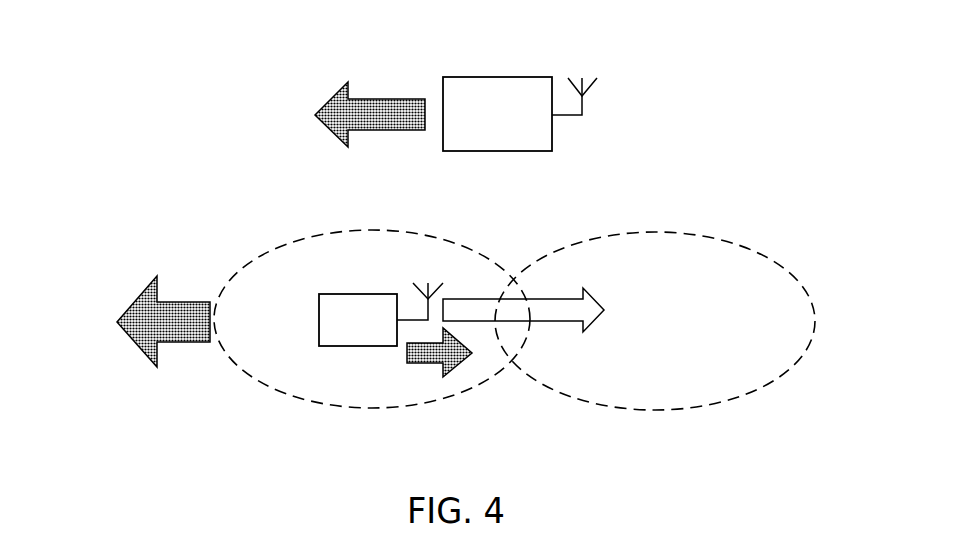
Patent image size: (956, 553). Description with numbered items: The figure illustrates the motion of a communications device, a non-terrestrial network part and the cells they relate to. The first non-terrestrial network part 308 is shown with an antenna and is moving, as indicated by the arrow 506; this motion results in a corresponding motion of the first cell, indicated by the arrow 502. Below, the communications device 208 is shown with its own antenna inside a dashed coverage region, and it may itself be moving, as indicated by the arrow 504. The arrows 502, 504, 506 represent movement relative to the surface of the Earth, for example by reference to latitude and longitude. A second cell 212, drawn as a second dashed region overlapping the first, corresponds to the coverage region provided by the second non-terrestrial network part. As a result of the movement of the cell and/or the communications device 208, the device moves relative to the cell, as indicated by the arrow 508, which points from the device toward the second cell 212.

The communications device 208 is at (357, 347).
The second cell 212 is at (773, 380).
The first non-terrestrial network part 308 is at (498, 77).
The arrow 502 is at (135, 348).
The arrow 504 is at (428, 363).
The arrow 506 is at (345, 92).
The arrow 508 is at (572, 298).